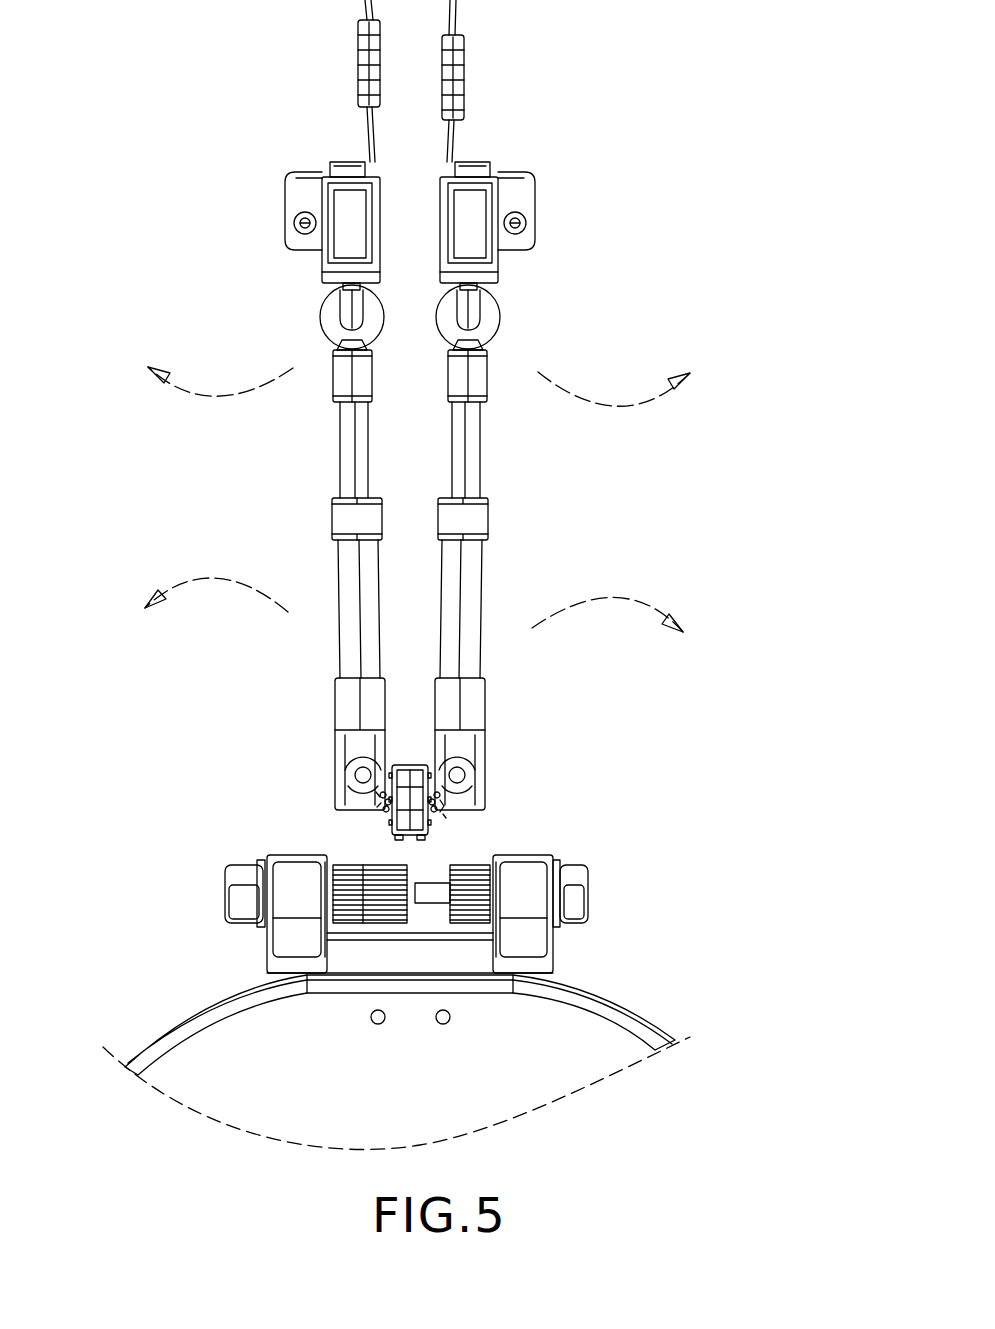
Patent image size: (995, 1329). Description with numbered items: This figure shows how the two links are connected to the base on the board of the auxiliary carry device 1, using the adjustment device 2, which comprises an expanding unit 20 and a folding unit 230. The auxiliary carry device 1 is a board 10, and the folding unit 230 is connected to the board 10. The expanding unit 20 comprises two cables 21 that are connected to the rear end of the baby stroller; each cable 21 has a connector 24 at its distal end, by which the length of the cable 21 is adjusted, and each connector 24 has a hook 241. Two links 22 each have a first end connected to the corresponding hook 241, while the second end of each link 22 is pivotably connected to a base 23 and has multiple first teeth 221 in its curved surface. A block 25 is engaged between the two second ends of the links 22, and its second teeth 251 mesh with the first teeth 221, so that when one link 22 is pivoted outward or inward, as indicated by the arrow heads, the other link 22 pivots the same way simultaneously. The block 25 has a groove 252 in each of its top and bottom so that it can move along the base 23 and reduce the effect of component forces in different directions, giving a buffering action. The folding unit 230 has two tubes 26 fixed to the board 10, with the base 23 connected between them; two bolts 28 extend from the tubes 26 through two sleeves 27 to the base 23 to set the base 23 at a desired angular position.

The auxiliary carry device 1 is at (718, 1077).
The adjustment device 2 is at (176, 722).
The board 10 is at (592, 1043).
The expanding unit 20 is at (525, 586).
The cable 21 is at (463, 112).
The link 22 is at (474, 640).
The first teeth 221 is at (443, 812).
The base 23 is at (390, 958).
The folding unit 230 is at (648, 891).
The connector 24 is at (488, 262).
The hook 241 is at (478, 313).
The block 25 is at (397, 763).
The second teeth 251 is at (383, 798).
The groove 252 is at (414, 768).
The tube 26 is at (530, 885).
The sleeve 27 is at (348, 862).
The bolt 28 is at (250, 898).